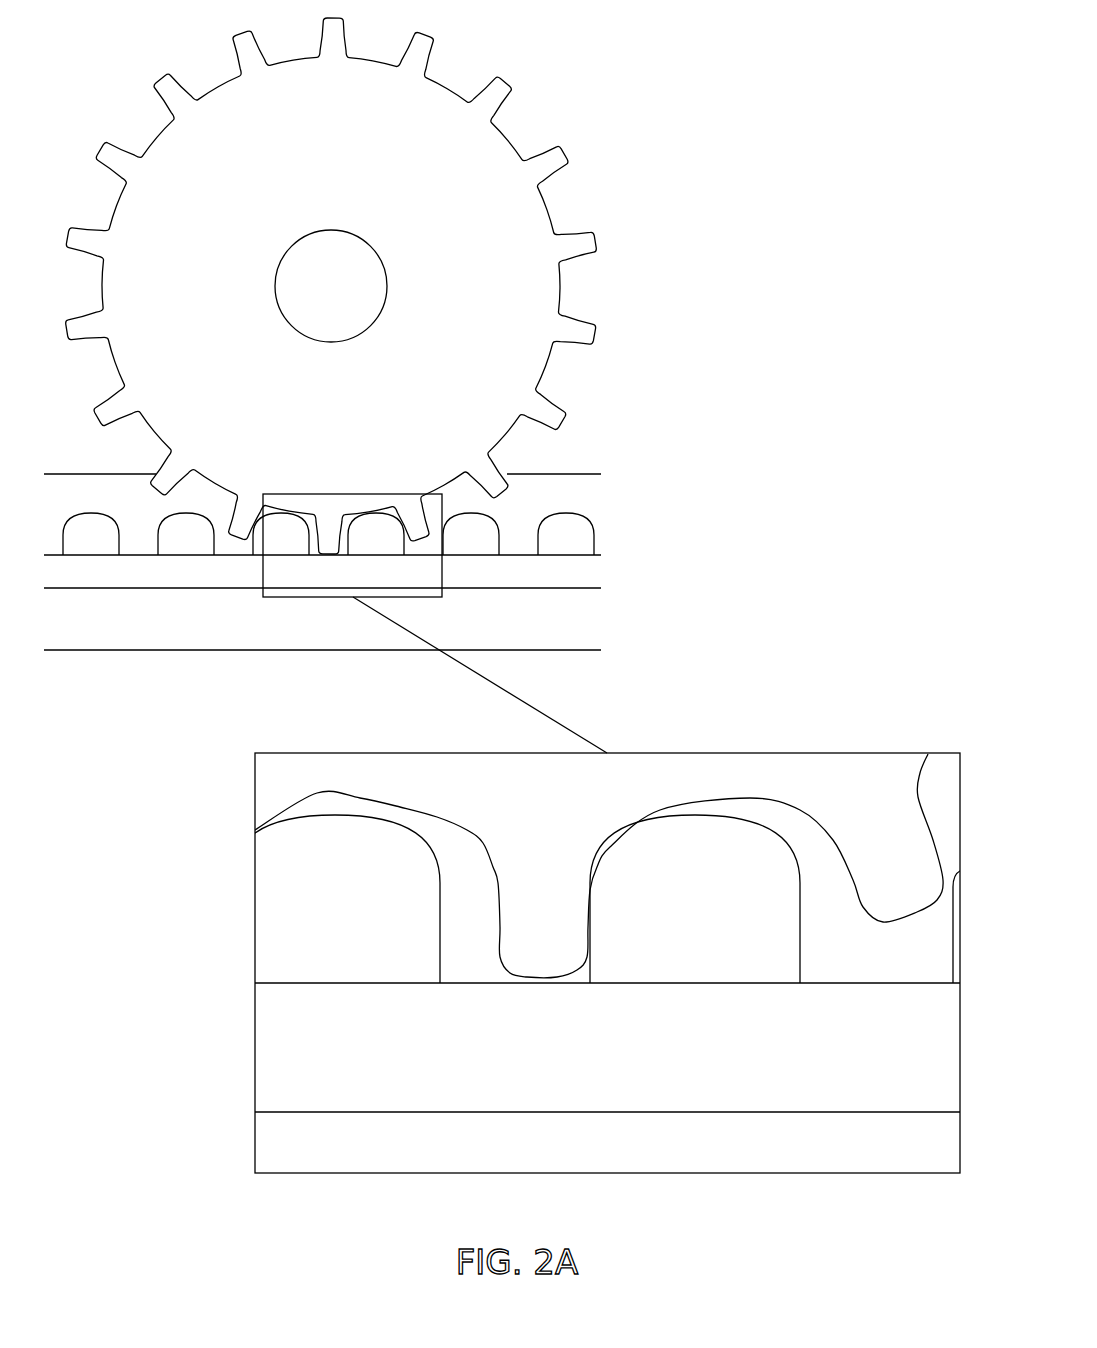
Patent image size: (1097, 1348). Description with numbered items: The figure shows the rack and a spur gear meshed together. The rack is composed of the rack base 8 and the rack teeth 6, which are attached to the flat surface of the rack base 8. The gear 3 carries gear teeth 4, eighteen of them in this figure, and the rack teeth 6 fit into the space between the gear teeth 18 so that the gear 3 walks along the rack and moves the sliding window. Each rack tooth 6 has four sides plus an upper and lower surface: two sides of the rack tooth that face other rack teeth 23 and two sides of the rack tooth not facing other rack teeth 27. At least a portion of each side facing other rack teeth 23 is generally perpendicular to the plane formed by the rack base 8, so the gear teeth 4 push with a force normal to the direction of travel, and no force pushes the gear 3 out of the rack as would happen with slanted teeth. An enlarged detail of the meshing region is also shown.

The gear 3 is at (503, 245).
The gear teeth 4 is at (551, 163).
The space between the gear teeth 18 is at (562, 288).
The rack teeth 6 is at (553, 528).
The rack base 8 is at (580, 577).
The sides of the rack tooth that face other rack teeth 23 is at (442, 912).
The sides of the rack tooth not facing other rack teeth 27 is at (330, 918).